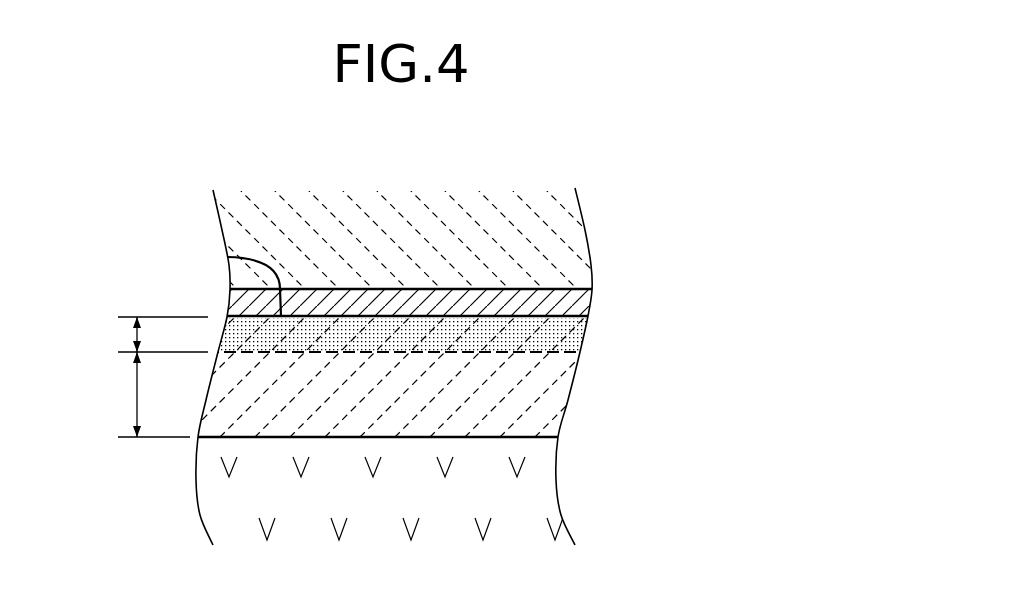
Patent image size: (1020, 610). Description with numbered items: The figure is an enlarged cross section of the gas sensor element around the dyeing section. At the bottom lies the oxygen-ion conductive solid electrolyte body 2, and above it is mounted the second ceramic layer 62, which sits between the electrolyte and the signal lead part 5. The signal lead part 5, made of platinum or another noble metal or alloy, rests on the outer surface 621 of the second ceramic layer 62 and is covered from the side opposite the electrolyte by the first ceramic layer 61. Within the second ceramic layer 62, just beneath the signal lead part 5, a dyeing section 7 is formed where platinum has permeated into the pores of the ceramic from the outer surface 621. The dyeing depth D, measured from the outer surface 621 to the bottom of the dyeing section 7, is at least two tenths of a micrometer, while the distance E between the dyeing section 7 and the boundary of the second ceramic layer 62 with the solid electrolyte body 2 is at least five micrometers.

The first ceramic layer 61 is at (460, 228).
The signal lead part 5 is at (540, 303).
The outer surface 621 is at (227, 257).
The dyeing section 7 is at (573, 338).
The second ceramic layer 62 is at (552, 397).
The solid electrolyte body 2 is at (545, 488).
The dyeing depth D is at (154, 334).
The distance E is at (146, 394).